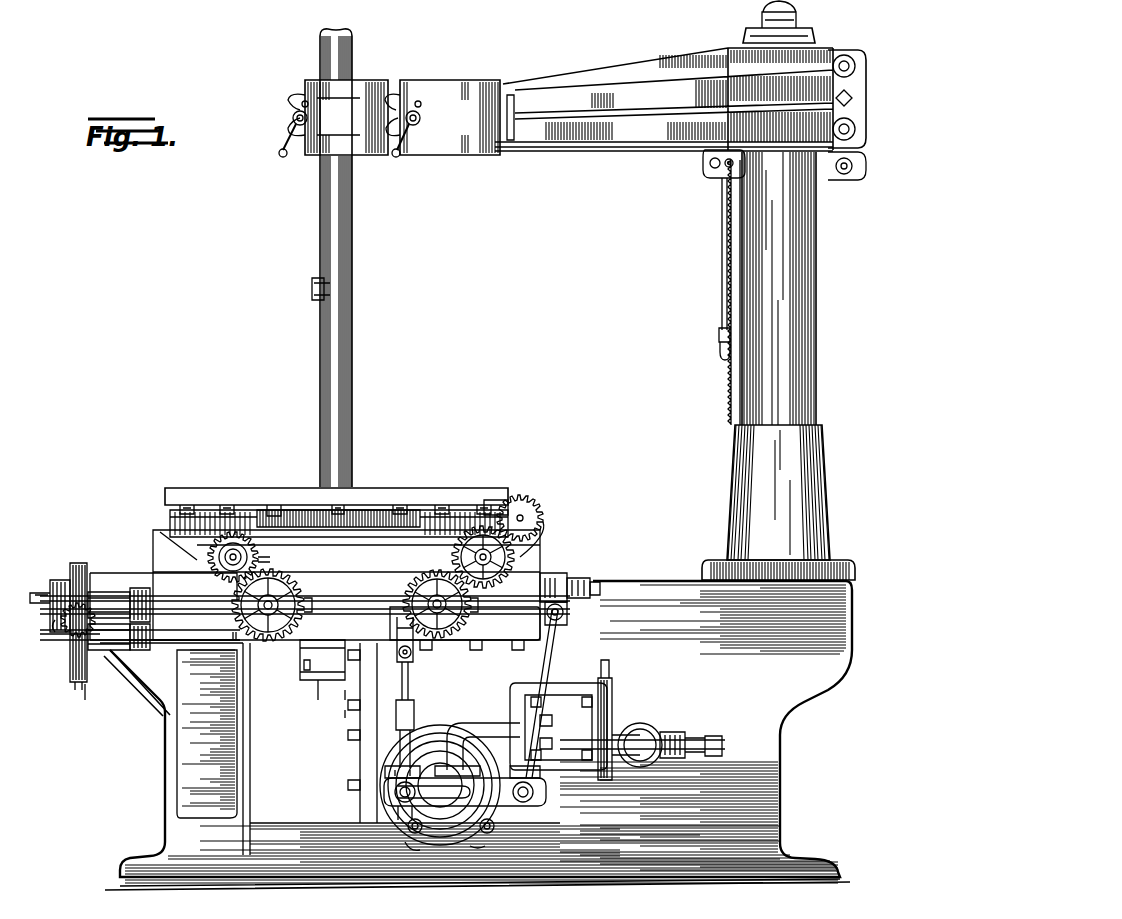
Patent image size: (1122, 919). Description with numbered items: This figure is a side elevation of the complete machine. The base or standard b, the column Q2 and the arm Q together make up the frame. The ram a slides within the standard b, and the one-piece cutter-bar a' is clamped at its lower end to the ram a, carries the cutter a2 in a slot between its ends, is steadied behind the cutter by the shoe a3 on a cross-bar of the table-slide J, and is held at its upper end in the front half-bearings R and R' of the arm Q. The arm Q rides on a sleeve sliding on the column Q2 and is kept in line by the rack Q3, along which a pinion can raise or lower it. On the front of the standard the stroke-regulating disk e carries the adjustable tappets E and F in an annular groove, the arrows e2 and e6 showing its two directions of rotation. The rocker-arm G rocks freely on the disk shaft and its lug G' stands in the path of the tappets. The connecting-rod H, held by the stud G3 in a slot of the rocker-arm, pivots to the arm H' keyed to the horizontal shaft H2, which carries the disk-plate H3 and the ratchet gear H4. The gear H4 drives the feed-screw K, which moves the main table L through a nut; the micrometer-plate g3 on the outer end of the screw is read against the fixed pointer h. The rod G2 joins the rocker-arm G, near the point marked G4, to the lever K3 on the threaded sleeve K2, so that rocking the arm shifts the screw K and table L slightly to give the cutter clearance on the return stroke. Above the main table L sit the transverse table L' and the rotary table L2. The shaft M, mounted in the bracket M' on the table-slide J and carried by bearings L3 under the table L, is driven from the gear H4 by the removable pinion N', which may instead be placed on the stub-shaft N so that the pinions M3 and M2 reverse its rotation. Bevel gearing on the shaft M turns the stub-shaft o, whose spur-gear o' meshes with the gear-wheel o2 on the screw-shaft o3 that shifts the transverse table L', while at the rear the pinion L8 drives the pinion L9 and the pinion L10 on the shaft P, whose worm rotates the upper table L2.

The cutter-bar a' is at (357, 258).
The cutter a2 is at (312, 290).
The shoe a3 is at (465, 728).
The front bearing R is at (333, 118).
The front bearing R' is at (442, 118).
The arm Q is at (580, 152).
The column Q2 is at (863, 346).
The rack Q3 is at (732, 385).
The rotary table L2 is at (275, 490).
The shaft P is at (520, 518).
The pinion L10 is at (540, 505).
The transverse table L' is at (319, 523).
The main table L is at (338, 538).
The table-slide J is at (315, 585).
The stub-shaft o is at (305, 589).
The screw-shaft o3 is at (220, 556).
The gear-wheel o2 is at (271, 551).
The bearings L3 is at (310, 578).
The pinion L9 is at (514, 560).
The pinion L8 is at (475, 633).
The feed-screw K is at (52, 592).
The sleeve K2 is at (580, 578).
The lever K3 is at (598, 583).
The fixed pointer h is at (78, 563).
The micrometer-plate g3 is at (67, 570).
The bracket M' is at (109, 586).
The pinion M2 is at (140, 588).
The shaft M is at (144, 650).
The pinion M3 is at (128, 665).
The stub-shaft N is at (135, 647).
The pinion N' is at (42, 624).
The disk-plate H3 is at (70, 680).
The gear-wheel H4 is at (81, 698).
The spur-gear o' is at (249, 649).
The horizontal shaft H2 is at (300, 648).
The ram a is at (321, 684).
The connecting-rod H is at (396, 715).
The arm H' is at (416, 643).
The tappet E is at (420, 832).
The tappet F is at (494, 830).
The stroke-regulating disk e is at (452, 845).
The arrow e6 is at (416, 863).
The arrow e2 is at (491, 858).
The rocker-arm G is at (465, 792).
The stud G3 is at (396, 790).
The pivot pin G4 is at (534, 792).
The lug G' is at (396, 784).
The rod G2 is at (576, 650).
The base or standard b is at (476, 735).